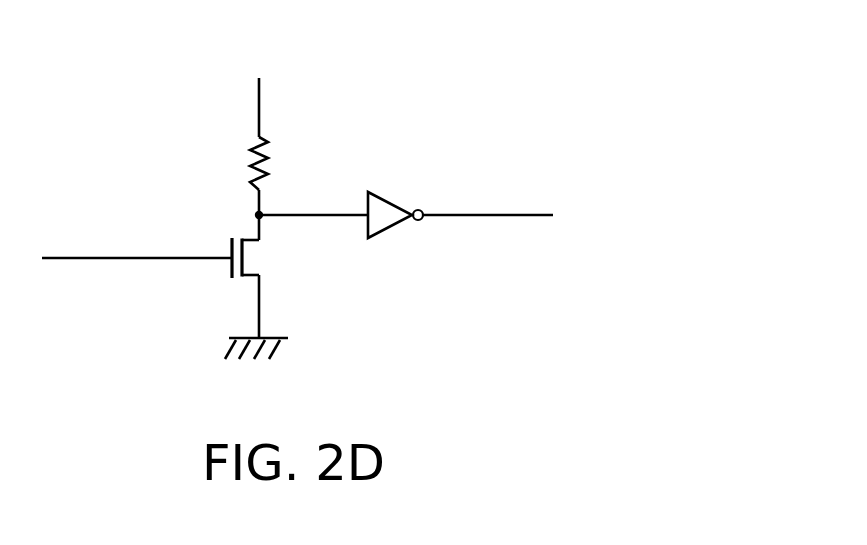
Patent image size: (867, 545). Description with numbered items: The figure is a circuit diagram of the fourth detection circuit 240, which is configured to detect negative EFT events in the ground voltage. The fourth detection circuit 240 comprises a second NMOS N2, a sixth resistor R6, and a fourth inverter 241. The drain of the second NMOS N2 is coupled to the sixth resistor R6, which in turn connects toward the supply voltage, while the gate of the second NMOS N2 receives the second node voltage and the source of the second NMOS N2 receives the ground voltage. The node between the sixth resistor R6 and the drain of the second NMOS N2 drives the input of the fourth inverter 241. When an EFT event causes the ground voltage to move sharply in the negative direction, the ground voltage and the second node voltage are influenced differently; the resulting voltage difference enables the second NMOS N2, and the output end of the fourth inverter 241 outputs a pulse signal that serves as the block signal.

The fourth detection circuit 240 is at (442, 50).
The fourth inverter 241 is at (394, 193).
The sixth resistor R6 is at (268, 157).
The second NMOS N2 is at (254, 258).